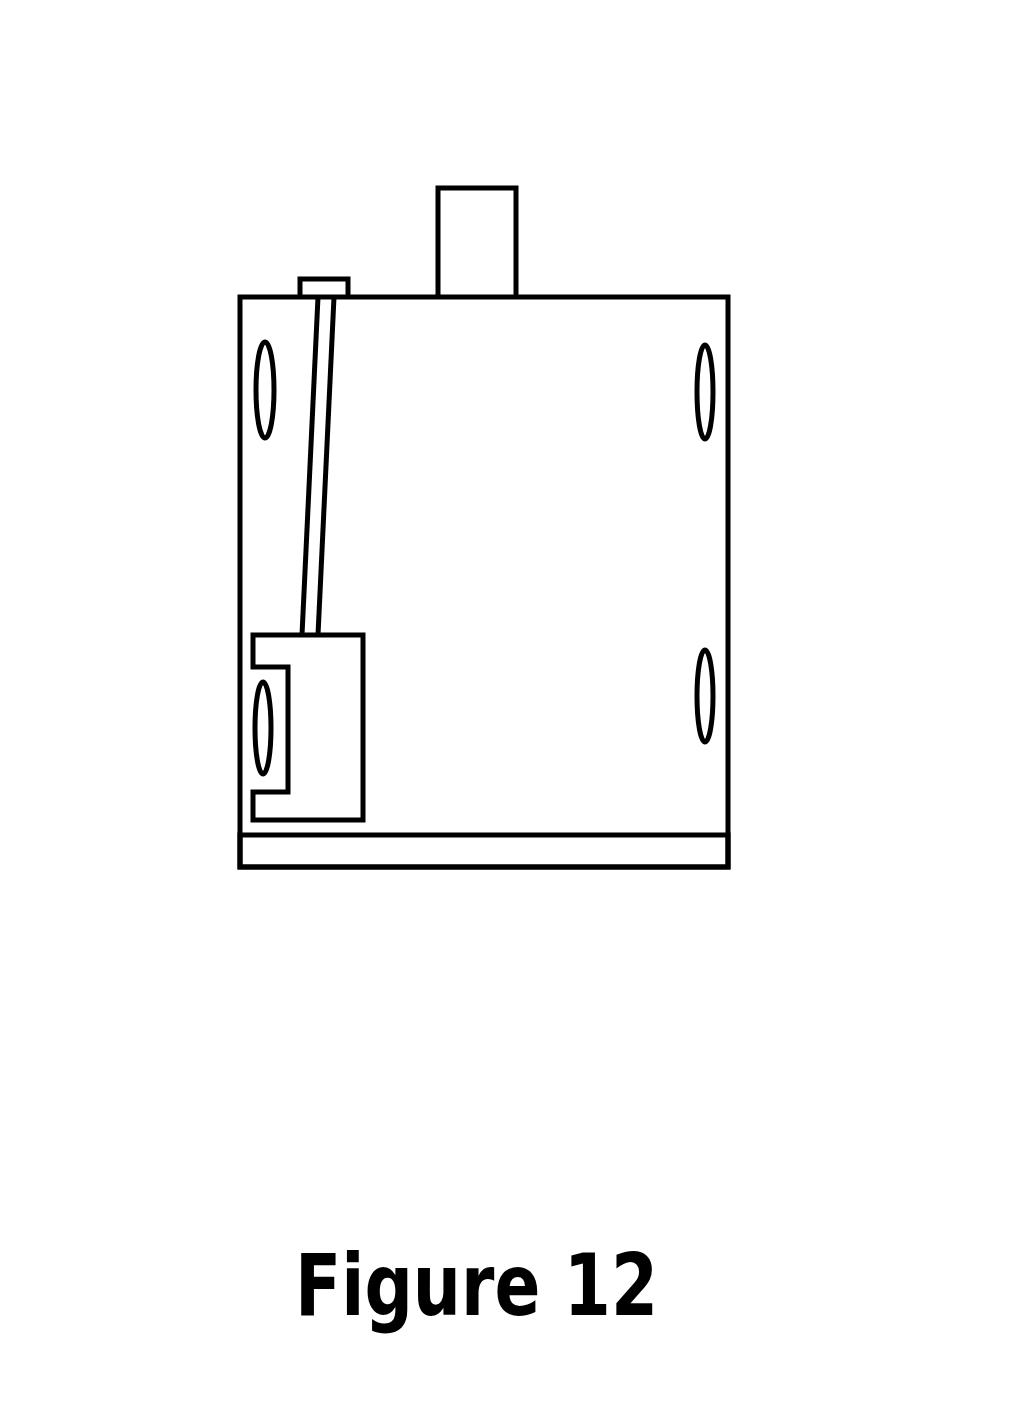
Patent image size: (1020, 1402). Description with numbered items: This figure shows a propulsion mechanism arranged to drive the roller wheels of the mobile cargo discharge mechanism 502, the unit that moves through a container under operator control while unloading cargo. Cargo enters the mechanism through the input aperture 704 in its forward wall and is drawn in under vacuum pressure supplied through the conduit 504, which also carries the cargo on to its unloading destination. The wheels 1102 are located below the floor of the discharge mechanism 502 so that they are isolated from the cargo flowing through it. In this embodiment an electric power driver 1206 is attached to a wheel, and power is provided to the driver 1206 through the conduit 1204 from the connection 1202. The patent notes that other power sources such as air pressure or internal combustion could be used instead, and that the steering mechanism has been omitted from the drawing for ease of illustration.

The mobile cargo discharge mechanism 502 is at (308, 138).
The conduit 504 is at (470, 257).
The input aperture 704 is at (482, 852).
The wheels 1102 is at (258, 390).
The connection 1202 is at (320, 282).
The conduit 1204 is at (310, 544).
The electric power driver 1206 is at (335, 787).